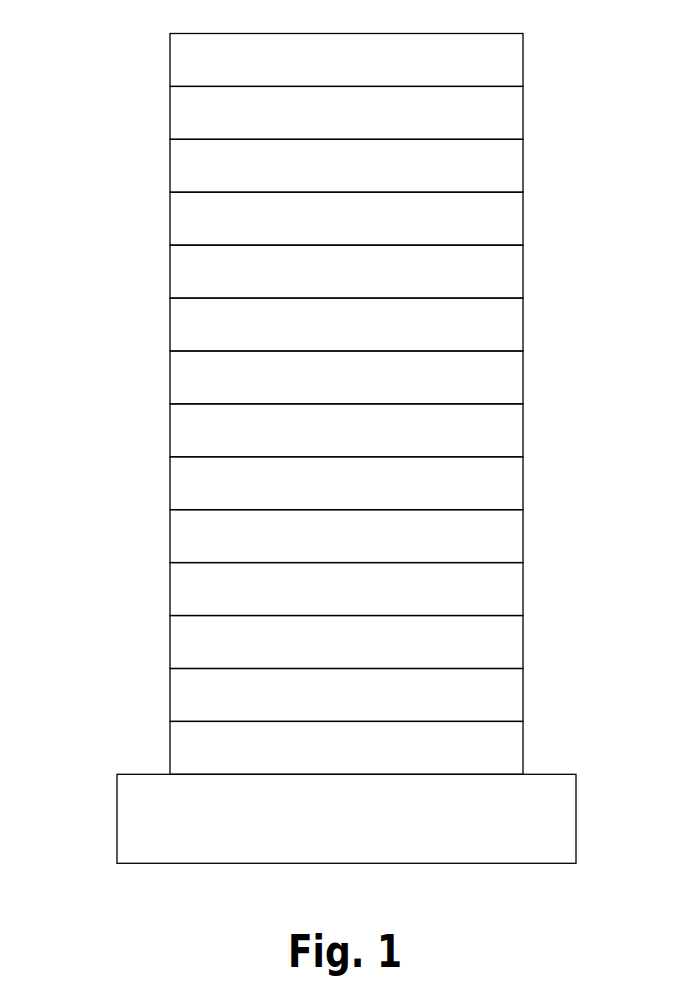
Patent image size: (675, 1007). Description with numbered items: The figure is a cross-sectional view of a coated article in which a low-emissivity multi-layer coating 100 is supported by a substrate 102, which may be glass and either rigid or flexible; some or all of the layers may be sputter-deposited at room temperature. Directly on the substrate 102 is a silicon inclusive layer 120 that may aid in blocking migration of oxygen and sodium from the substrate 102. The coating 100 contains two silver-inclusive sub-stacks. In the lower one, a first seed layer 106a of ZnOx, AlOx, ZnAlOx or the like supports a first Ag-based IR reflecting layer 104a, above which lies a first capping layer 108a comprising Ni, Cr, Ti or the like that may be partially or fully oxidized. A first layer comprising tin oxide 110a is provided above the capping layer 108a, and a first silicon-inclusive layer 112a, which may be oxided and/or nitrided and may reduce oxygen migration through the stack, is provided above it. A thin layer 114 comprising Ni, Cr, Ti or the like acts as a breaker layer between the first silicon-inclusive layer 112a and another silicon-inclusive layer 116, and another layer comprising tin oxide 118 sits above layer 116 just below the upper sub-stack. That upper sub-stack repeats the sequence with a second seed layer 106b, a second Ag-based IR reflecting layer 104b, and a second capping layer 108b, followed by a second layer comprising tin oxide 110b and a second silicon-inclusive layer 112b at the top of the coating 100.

The multi-layer coating 100 is at (99, 34).
The substrate 102 is at (576, 817).
The first Ag-based IR reflecting layer 104a is at (523, 643).
The second Ag-based IR reflecting layer 104b is at (523, 219).
The first seed layer 106a is at (523, 696).
The second seed layer 106b is at (523, 272).
The first capping layer 108a is at (523, 590).
The second capping layer 108b is at (523, 166).
The first layer comprising tin oxide 110a is at (523, 537).
The second layer comprising tin oxide 110b is at (523, 113).
The first silicon-inclusive layer 112a is at (523, 484).
The second silicon-inclusive layer 112b is at (523, 60).
The thin layer comprising Ni, Cr, Ti 114 is at (523, 431).
The silicon-inclusive layer 116 is at (523, 378).
The layer comprising tin oxide 118 is at (523, 325).
The silicon inclusive layer 120 is at (523, 748).